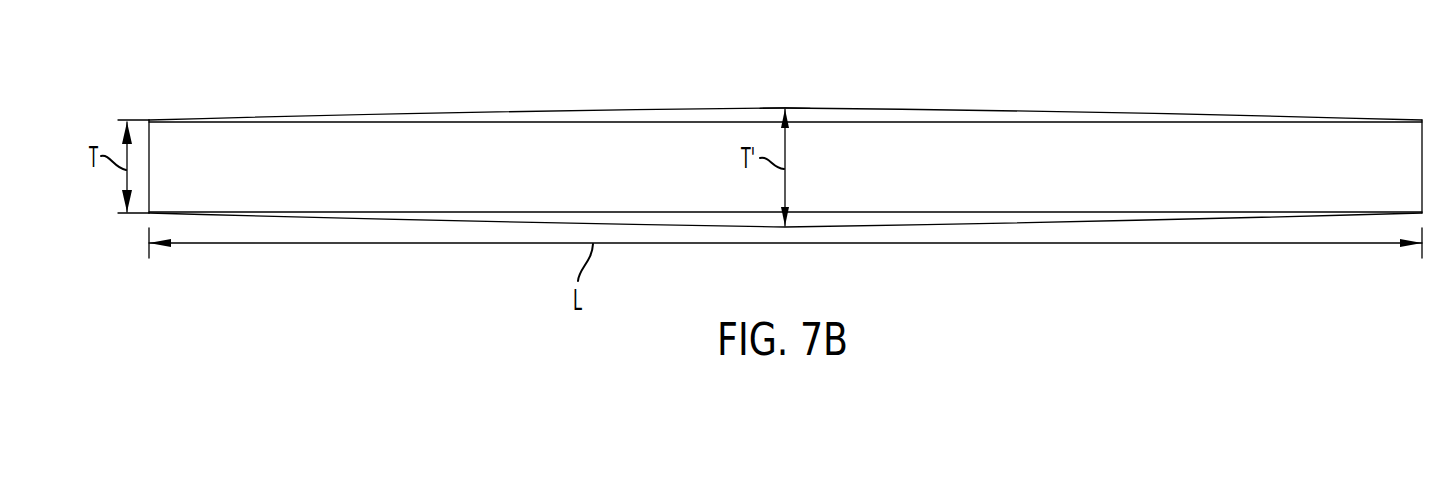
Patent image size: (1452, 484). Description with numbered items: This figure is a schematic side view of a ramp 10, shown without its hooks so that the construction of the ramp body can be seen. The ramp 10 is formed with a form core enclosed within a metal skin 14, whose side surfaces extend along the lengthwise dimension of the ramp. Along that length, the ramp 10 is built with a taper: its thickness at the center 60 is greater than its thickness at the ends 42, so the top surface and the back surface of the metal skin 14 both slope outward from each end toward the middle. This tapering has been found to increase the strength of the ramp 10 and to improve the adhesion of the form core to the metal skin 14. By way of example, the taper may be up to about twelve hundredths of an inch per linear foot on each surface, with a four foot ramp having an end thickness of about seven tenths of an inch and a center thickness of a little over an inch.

The ramp 10 is at (1198, 66).
The metal skin 14 is at (1285, 122).
The ends 42 is at (151, 100).
The center 60 is at (785, 84).